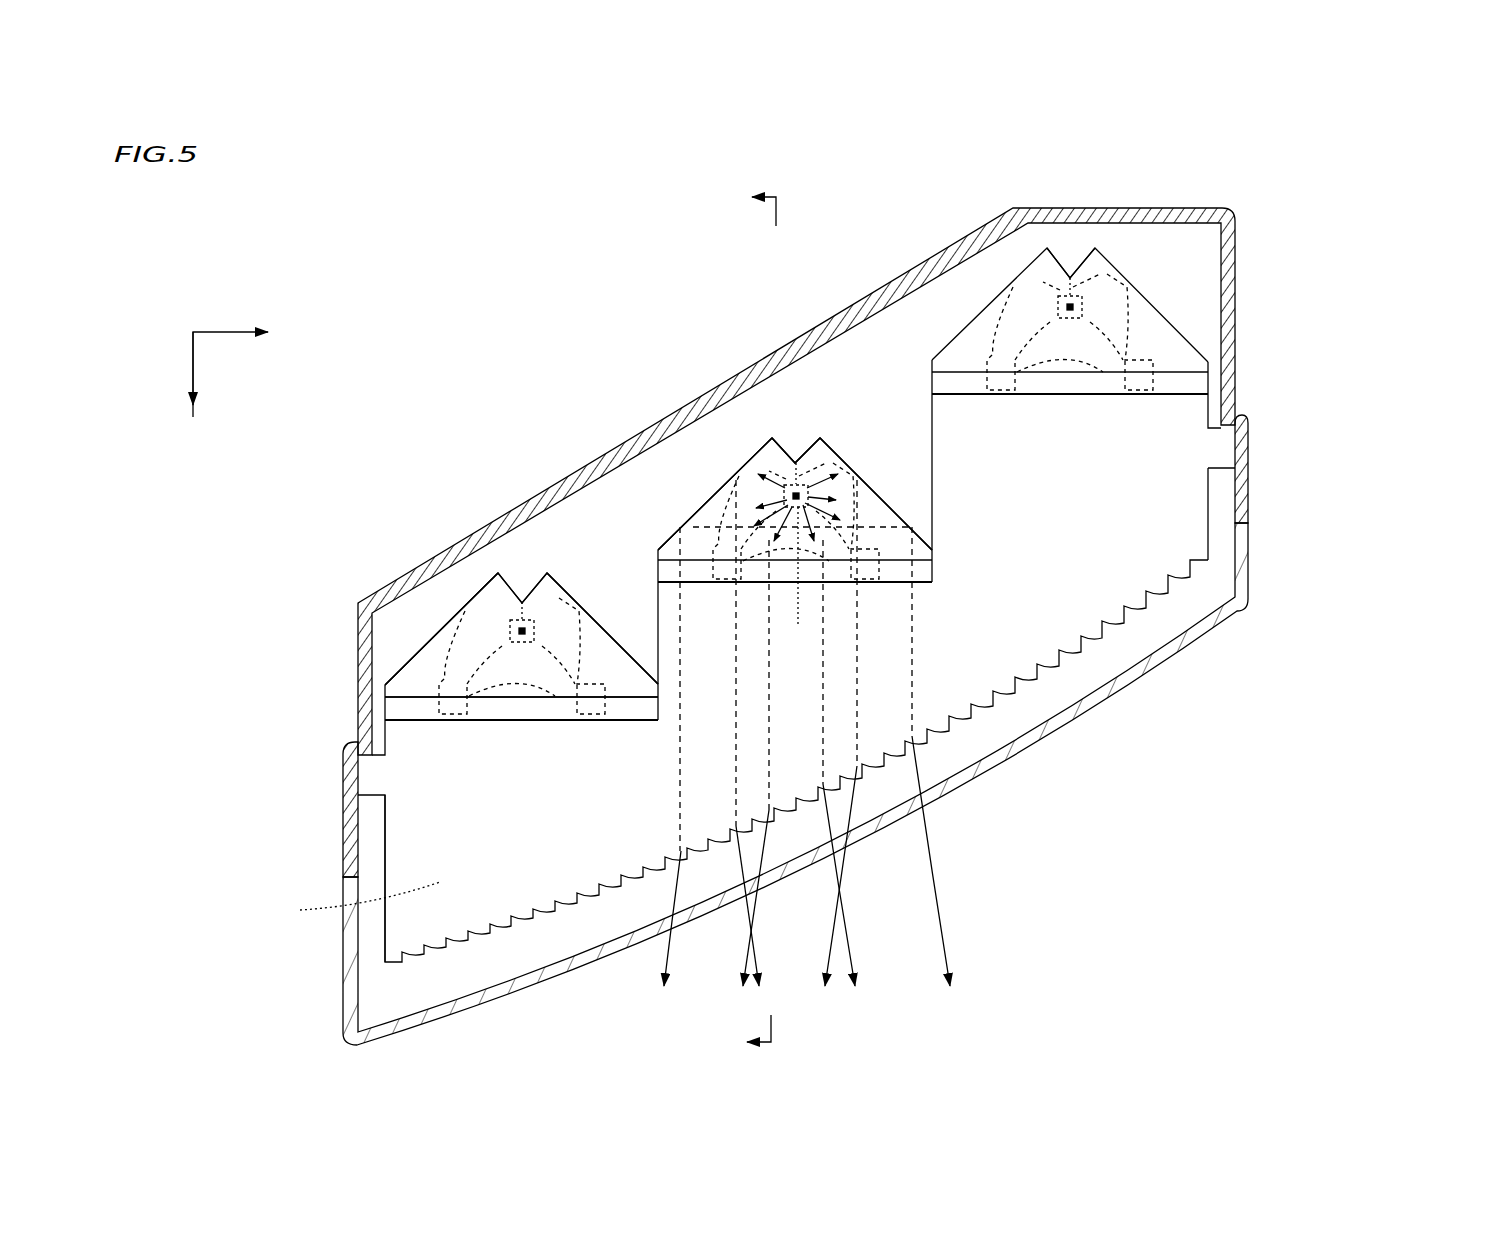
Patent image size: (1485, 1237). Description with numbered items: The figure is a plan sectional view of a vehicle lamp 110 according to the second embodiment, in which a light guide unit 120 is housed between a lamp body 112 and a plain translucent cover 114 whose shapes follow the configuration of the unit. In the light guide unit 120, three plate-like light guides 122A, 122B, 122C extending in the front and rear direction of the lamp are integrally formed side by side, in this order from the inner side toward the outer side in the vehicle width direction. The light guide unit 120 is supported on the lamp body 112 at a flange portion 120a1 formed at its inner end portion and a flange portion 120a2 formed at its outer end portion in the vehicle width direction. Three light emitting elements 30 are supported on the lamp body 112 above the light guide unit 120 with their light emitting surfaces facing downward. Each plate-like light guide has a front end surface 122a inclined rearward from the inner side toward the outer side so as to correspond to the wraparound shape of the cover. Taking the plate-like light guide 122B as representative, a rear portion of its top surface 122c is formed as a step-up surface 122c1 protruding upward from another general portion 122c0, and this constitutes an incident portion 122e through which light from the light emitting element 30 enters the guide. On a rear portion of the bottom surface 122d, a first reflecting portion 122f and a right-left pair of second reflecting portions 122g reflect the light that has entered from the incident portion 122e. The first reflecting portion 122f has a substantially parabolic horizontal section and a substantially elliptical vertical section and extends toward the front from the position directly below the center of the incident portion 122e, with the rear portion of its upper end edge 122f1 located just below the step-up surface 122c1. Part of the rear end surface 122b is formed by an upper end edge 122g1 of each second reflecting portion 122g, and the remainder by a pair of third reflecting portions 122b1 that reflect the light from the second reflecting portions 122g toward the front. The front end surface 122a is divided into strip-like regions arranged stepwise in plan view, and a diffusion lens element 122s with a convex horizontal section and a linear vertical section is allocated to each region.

The vehicle lamp 110 is at (468, 305).
The lamp body 112 is at (492, 520).
The translucent cover 114 is at (946, 802).
The light guide unit 120 is at (1450, 438).
The flange portion 120a1 is at (370, 777).
The flange portion 120a2 is at (1223, 450).
The plate-like light guide 122A is at (667, 712).
The plate-like light guide 122B is at (939, 575).
The plate-like light guide 122C is at (1224, 390).
The front end surface 122a is at (655, 928).
The rear end surface 122b is at (768, 447).
The third reflecting portion 122b1 is at (735, 476).
The top surface 122c is at (235, 605).
The general portion 122c0 is at (497, 768).
The step-up surface 122c1 is at (440, 660).
The bottom surface 122d is at (340, 901).
The incident portion 122e is at (805, 483).
The first reflecting portion 122f is at (796, 665).
The upper end edge 122f1 is at (1045, 306).
The second reflecting portion 122g is at (745, 505).
The upper end edge 122g1 is at (797, 462).
The diffusion lens element 122s is at (550, 908).
The light emitting element 30 is at (532, 648).